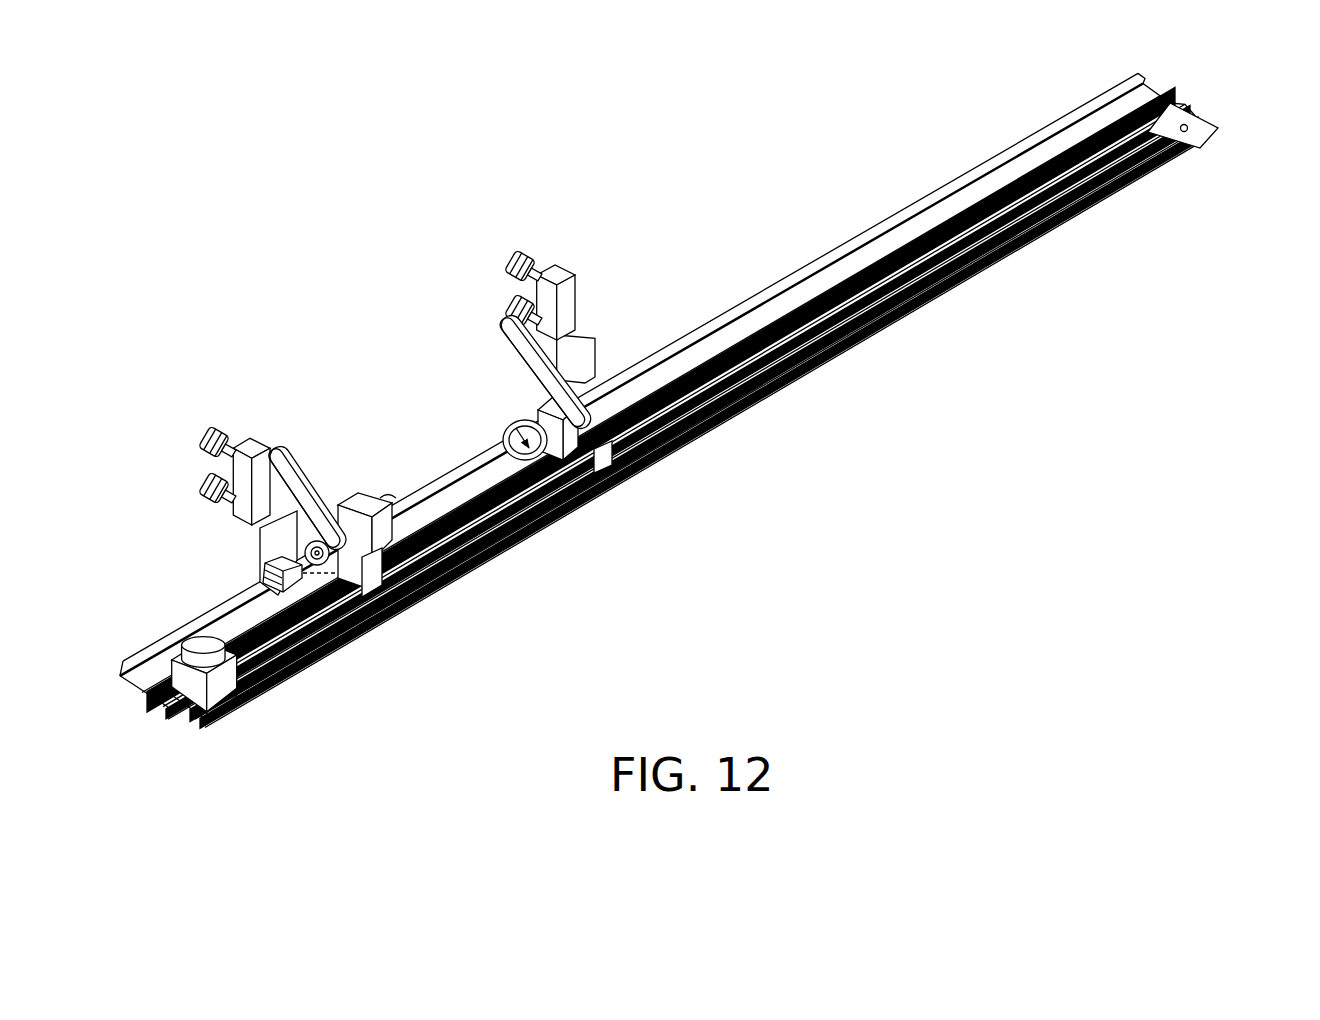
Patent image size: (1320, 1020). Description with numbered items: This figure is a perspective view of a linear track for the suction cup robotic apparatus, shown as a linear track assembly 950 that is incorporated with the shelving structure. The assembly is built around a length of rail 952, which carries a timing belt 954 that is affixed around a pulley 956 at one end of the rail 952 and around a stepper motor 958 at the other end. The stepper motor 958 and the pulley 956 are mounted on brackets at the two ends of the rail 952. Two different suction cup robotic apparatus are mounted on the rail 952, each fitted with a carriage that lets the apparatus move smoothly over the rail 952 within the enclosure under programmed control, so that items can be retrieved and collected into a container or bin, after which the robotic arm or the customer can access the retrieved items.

The clamping rail assembly 950 is at (224, 233).
The rail 952 is at (628, 378).
The timing belt 954 is at (690, 409).
The pulley 956 is at (1202, 148).
The stepper motor 958 is at (190, 714).